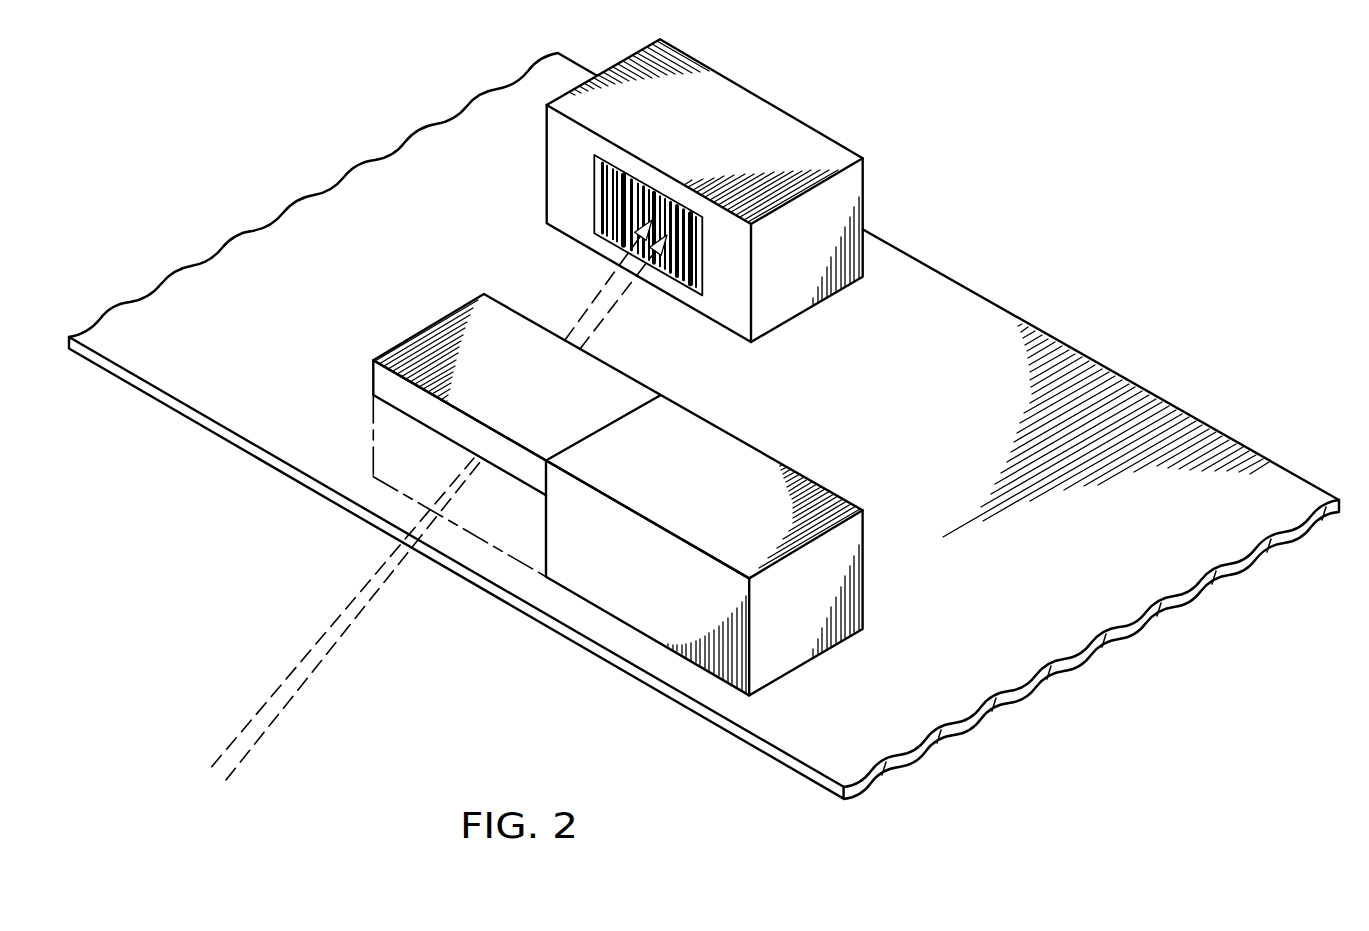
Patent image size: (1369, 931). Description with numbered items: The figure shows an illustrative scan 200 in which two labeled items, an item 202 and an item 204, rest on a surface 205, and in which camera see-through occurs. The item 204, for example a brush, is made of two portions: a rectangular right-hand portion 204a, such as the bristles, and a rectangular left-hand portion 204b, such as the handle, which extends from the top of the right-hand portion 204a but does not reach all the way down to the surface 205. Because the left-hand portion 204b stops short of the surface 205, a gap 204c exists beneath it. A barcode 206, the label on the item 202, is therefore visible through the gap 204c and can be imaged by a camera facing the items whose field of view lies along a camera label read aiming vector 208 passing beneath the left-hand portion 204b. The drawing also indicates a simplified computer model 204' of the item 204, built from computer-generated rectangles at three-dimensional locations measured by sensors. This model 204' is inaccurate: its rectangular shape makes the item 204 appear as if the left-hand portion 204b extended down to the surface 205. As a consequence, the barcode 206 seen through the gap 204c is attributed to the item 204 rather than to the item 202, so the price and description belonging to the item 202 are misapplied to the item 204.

The optical sensing system 200 is at (948, 96).
The item 202 is at (760, 92).
The item 204 is at (570, 467).
The right-hand portion 204a is at (758, 468).
The left-hand portion 204b is at (473, 315).
The gap 204c is at (411, 509).
The simplified computer model 204' is at (459, 550).
The surface 205 is at (971, 306).
The barcode 206 is at (648, 185).
The camera label read aiming vector 208 is at (297, 685).